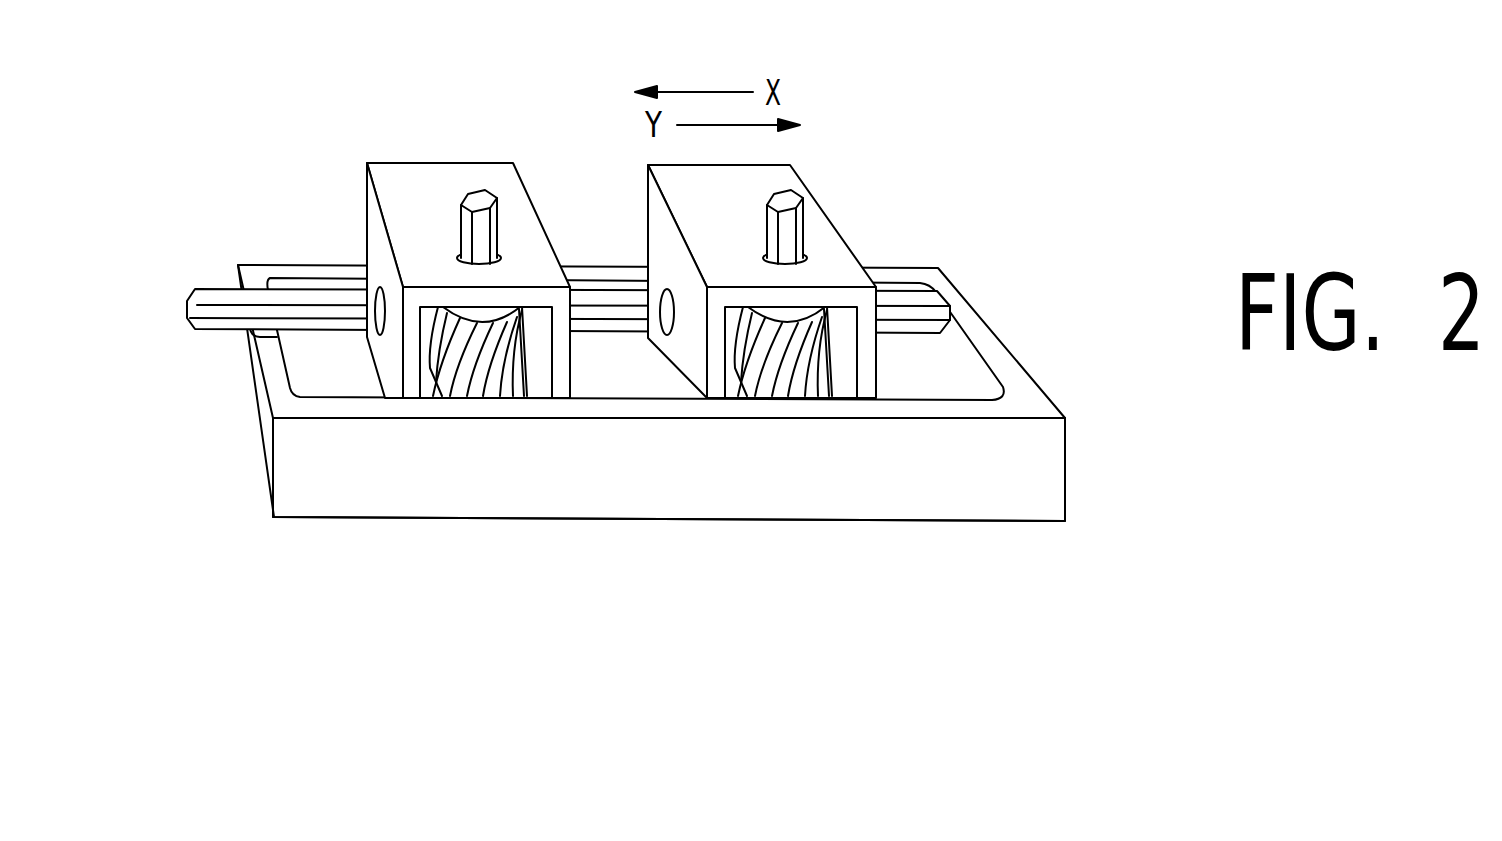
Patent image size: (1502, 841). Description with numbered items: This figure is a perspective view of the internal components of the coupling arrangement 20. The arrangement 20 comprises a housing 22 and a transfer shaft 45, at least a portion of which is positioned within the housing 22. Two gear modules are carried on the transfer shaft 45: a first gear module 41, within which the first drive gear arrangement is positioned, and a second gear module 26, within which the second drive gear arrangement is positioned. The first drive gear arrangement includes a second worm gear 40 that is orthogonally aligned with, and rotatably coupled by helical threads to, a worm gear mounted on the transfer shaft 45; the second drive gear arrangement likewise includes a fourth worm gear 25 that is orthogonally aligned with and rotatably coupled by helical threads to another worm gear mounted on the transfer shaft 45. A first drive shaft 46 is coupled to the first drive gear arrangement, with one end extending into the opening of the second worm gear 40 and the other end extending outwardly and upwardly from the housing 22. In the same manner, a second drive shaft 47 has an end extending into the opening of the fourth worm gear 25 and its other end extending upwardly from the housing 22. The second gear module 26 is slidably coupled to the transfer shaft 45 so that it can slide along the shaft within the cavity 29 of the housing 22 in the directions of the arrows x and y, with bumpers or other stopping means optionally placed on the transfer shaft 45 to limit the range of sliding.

The coupling arrangement 20 is at (651, 485).
The housing 22 is at (634, 532).
The cavity 29 is at (676, 455).
The transfer shaft 45 is at (568, 173).
The first gear module 41 is at (396, 237).
The second worm gear 40 is at (452, 462).
The first drive shaft 46 is at (419, 140).
The second gear module 26 is at (838, 237).
The fourth worm gear 25 is at (752, 462).
The second drive shaft 47 is at (882, 136).